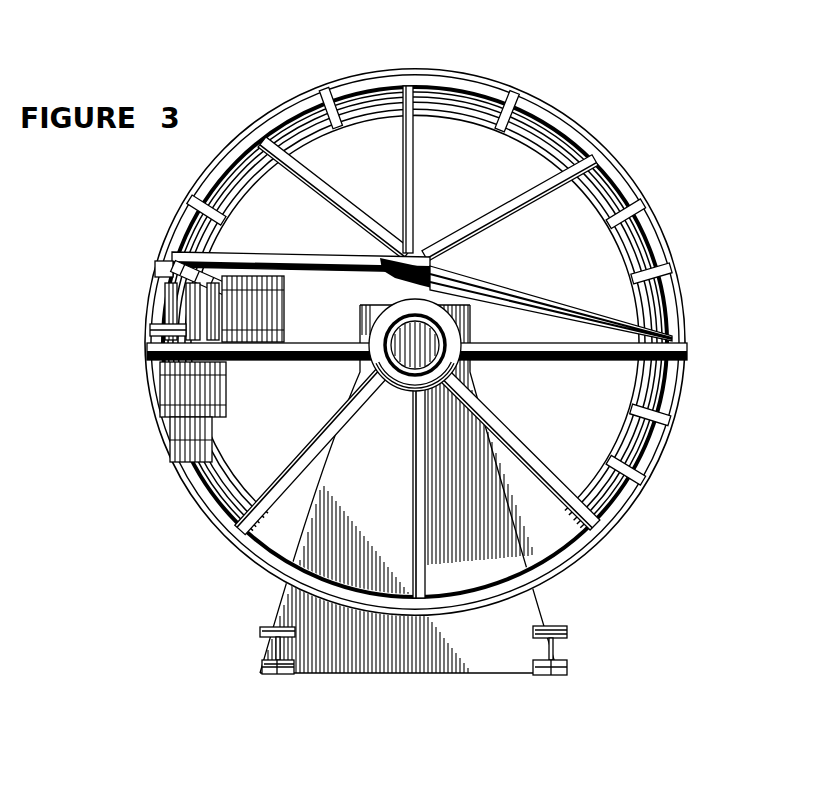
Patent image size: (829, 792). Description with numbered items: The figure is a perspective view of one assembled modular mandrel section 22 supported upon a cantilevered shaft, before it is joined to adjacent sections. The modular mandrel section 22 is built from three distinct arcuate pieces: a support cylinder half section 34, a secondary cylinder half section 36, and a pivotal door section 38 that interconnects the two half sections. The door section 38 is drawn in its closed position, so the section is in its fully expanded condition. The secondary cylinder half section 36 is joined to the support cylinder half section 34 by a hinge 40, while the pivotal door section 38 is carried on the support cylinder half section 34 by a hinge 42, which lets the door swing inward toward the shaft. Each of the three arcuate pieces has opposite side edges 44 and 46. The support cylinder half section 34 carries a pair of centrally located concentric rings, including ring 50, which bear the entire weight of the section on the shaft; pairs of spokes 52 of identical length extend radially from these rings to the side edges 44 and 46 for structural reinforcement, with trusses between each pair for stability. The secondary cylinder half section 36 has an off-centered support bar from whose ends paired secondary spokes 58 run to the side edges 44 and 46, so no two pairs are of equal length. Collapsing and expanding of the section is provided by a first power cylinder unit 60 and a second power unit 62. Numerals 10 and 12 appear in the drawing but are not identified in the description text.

The support rails 10 is at (272, 682).
The screen curtain 12 is at (450, 525).
The modular mandrel section 22 is at (685, 232).
The support cylinder half section 34 is at (608, 533).
The secondary cylinder half section 36 is at (607, 148).
The pivotal door section 38 is at (158, 264).
The hinge 40 is at (668, 334).
The hinge 42 is at (150, 328).
The side edge 44 is at (453, 167).
The side edge 46 is at (489, 87).
The concentric ring 50 is at (450, 330).
The spokes 52 is at (583, 361).
The secondary spokes 58 is at (403, 184).
The first power cylinder unit 60 is at (198, 374).
The second power unit 62 is at (283, 322).